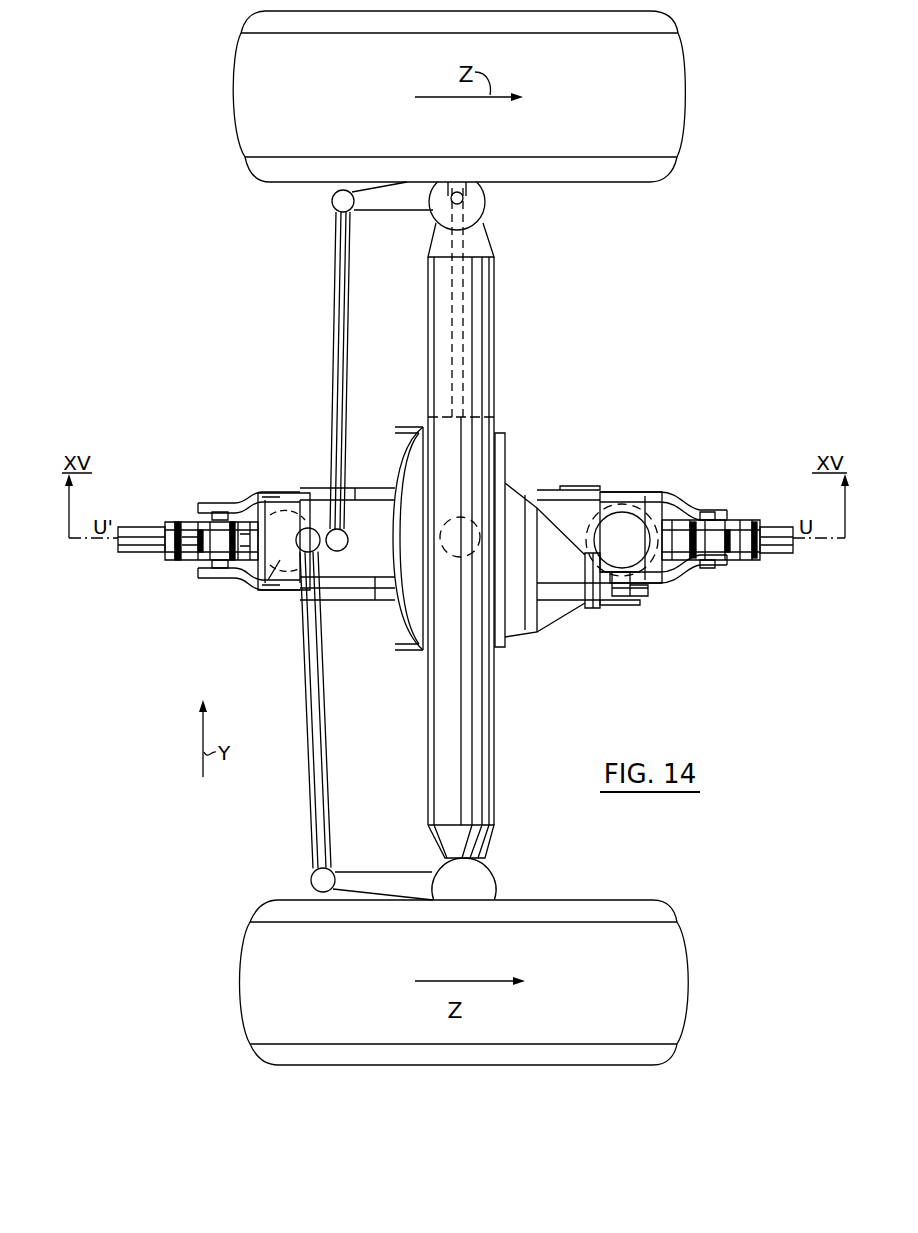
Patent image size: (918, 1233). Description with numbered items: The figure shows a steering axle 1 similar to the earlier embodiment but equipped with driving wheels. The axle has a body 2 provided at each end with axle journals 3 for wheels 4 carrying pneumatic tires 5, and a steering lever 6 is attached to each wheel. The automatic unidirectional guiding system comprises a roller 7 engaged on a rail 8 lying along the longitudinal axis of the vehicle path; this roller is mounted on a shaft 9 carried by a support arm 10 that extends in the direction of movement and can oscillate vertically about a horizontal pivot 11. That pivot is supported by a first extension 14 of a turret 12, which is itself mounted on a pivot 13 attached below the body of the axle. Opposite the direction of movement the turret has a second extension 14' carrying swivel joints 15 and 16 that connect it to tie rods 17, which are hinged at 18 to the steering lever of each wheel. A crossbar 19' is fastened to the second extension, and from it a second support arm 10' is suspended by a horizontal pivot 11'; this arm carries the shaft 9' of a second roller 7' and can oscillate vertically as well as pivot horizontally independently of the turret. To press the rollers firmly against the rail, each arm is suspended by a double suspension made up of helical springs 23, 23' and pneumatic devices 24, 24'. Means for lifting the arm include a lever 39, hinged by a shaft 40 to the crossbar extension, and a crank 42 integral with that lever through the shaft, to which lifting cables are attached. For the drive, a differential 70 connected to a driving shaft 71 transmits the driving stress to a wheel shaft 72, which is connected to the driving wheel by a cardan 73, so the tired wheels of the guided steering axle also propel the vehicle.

The steering axle 1 is at (490, 336).
The body 2 is at (483, 368).
The axle journal 3 is at (475, 200).
The wheel 4 is at (593, 172).
The pneumatic tire 5 is at (668, 115).
The steering lever 6 is at (411, 197).
The roller 7 is at (711, 493).
The second roller 7' is at (198, 493).
The rail 8 is at (145, 550).
The shaft 9 is at (725, 616).
The shaft of the second roller 9' is at (189, 473).
The support arm 10 is at (688, 621).
The second support arm 10' is at (225, 473).
The pivot 11 is at (611, 504).
The pivot 11' is at (412, 446).
The turret 12 is at (476, 503).
The pivot 13 is at (502, 640).
The first extension 14 is at (607, 472).
The second extension 14' is at (345, 629).
The swivel joint 15 is at (340, 528).
The swivel joint 16 is at (308, 528).
The tie rod 17 is at (348, 372).
The hinge 18 is at (333, 203).
The crossbar 19' is at (398, 538).
The helical spring 23 is at (572, 629).
The helical spring 23' is at (208, 624).
The pneumatic device 24 is at (613, 651).
The pneumatic device 24' is at (233, 626).
The lever 39 is at (290, 595).
The shaft 40 is at (693, 480).
The crank 42 is at (640, 498).
The differential 70 is at (415, 620).
The driving shaft 71 is at (605, 608).
The wheel shaft 72 is at (468, 285).
The cardan 73 is at (485, 192).